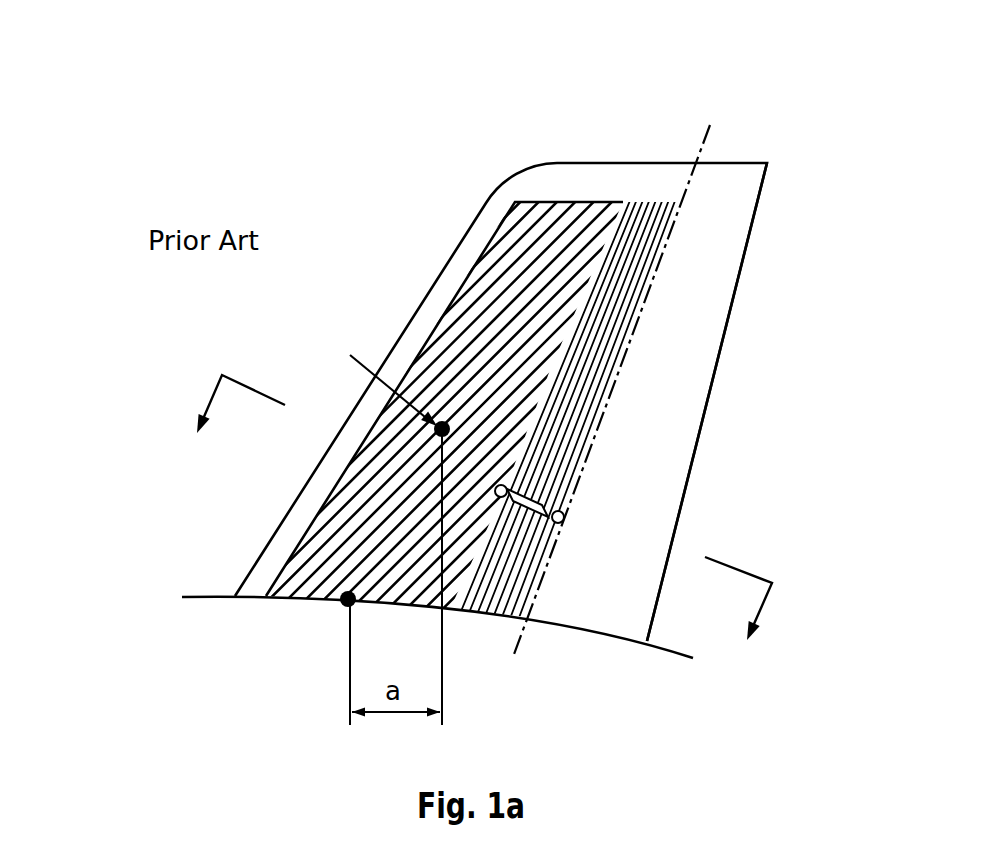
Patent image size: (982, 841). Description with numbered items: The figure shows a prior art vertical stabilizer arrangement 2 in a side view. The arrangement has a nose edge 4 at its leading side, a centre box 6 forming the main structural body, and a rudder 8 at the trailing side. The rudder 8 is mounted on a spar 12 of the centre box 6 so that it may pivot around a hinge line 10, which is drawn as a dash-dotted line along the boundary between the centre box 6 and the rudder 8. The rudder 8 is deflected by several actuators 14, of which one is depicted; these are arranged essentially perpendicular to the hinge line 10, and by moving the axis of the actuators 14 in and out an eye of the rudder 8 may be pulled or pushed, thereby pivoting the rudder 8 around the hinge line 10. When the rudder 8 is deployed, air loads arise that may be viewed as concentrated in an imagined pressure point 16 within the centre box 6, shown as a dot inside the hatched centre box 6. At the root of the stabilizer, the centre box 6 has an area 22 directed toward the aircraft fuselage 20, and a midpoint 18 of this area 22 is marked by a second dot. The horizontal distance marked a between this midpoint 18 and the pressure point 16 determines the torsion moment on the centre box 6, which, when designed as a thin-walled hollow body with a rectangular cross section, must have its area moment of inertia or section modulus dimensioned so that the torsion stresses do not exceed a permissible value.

The vertical stabilizer arrangement 2 is at (588, 110).
The nose edge 4 is at (441, 297).
The centre box 6 is at (497, 245).
The rudder 8 is at (725, 245).
The hinge line 10 is at (708, 135).
The spar 12 is at (648, 218).
The actuators 14 is at (531, 528).
The pressure point 16 is at (422, 450).
The midpoint 18 is at (344, 604).
The aircraft fuselage 20 is at (208, 595).
The area 22 is at (413, 620).